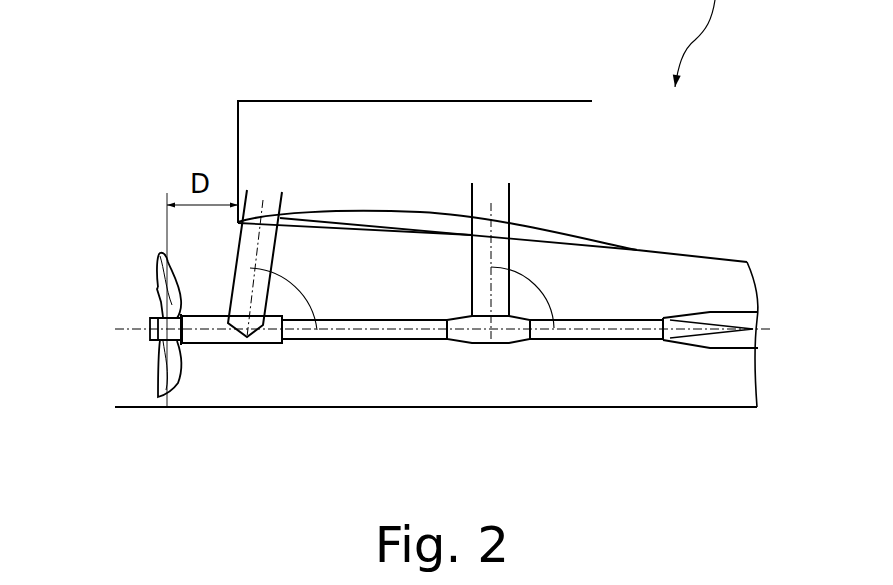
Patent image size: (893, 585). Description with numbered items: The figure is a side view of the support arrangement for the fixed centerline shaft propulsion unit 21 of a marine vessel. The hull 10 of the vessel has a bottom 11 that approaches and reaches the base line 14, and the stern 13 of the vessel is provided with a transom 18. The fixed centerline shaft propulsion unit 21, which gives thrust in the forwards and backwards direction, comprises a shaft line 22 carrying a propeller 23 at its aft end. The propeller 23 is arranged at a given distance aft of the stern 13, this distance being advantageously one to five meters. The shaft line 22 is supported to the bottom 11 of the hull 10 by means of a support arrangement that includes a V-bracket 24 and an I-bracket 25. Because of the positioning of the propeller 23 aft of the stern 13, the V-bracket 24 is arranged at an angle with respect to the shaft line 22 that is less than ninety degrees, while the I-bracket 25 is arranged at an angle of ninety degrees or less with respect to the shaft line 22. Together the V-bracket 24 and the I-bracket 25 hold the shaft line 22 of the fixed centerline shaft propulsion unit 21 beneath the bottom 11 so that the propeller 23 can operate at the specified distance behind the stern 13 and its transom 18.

The hull 10 is at (485, 150).
The bottom 11 is at (422, 242).
The stern 13 is at (233, 155).
The base line 14 is at (342, 412).
The transom 18 is at (233, 118).
The fixed centerline shaft propulsion unit 21 is at (300, 350).
The shaft line 22 is at (397, 333).
The propeller 23 is at (158, 255).
The V-bracket 24 is at (267, 230).
The I-bracket 25 is at (495, 250).